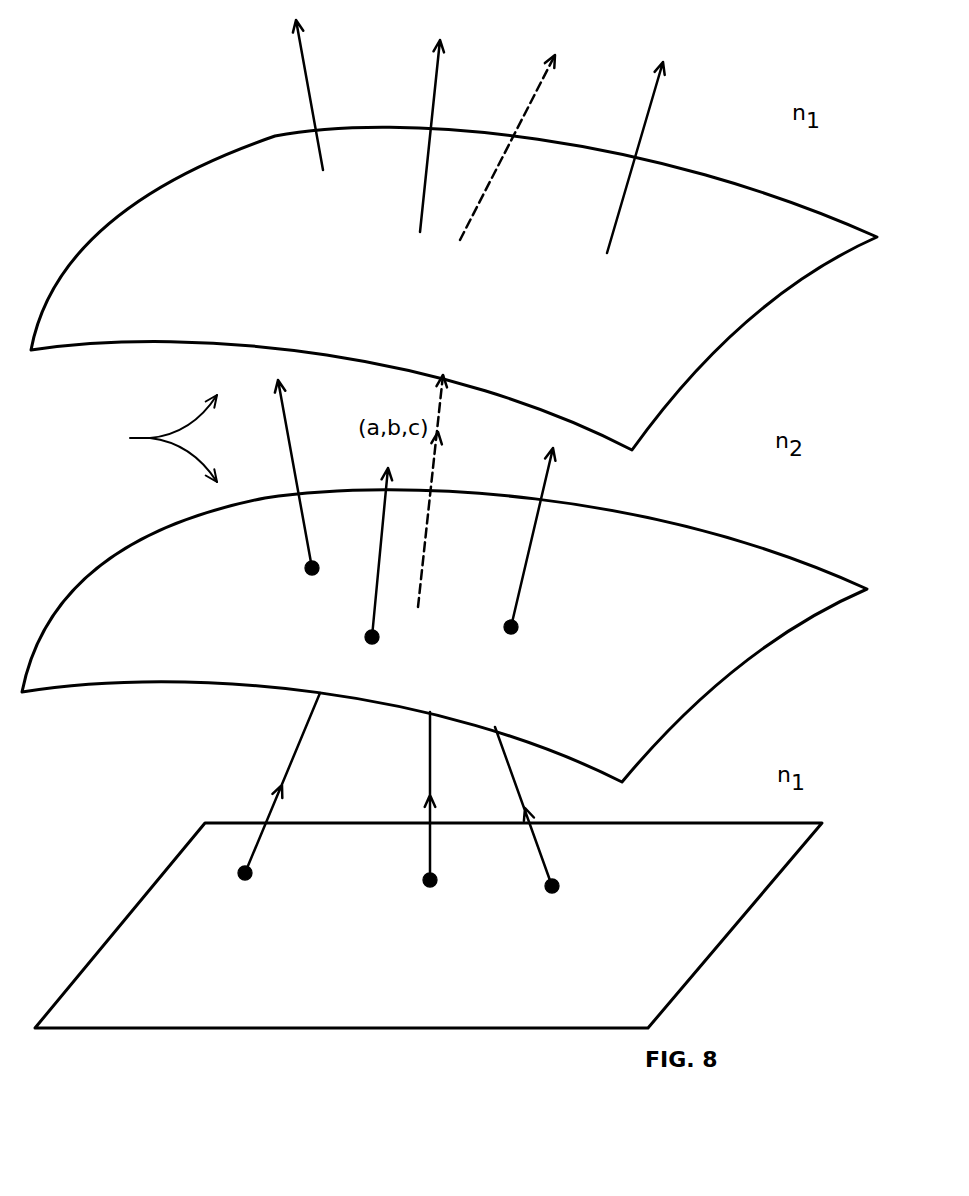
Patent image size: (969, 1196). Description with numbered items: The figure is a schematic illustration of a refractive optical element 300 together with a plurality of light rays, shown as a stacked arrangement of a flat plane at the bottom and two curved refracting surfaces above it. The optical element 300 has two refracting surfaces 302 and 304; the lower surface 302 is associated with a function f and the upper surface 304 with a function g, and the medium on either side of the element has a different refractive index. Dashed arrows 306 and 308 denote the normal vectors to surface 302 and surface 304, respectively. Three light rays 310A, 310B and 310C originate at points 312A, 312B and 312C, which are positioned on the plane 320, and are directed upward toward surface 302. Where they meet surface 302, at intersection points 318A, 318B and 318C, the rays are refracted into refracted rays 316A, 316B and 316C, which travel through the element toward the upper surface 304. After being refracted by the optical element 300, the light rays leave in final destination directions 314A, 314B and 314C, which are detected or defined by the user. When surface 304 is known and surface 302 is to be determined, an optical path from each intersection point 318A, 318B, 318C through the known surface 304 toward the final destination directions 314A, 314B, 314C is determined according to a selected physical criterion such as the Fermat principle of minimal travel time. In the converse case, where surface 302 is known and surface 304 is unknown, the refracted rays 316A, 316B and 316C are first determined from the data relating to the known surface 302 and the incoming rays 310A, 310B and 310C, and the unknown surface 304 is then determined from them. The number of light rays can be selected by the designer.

The refractive optical element 300 is at (138, 438).
The refracting surface 302 is at (722, 568).
The refracting surface 304 is at (723, 302).
The normal vector arrow 306 is at (433, 460).
The normal vector arrow 308 is at (530, 95).
The light ray 310A is at (515, 770).
The light ray 310B is at (428, 747).
The light ray 310C is at (283, 777).
The origin point 312A is at (550, 895).
The origin point 312B is at (428, 890).
The origin point 312C is at (245, 882).
The final destination direction 314A is at (647, 108).
The final destination direction 314B is at (430, 105).
The final destination direction 314C is at (305, 95).
The refracted ray 316A is at (535, 535).
The refracted ray 316B is at (383, 487).
The refracted ray 316C is at (288, 432).
The intersection point 318A is at (512, 636).
The intersection point 318B is at (366, 640).
The intersection point 318C is at (312, 576).
The plane 320 is at (143, 897).